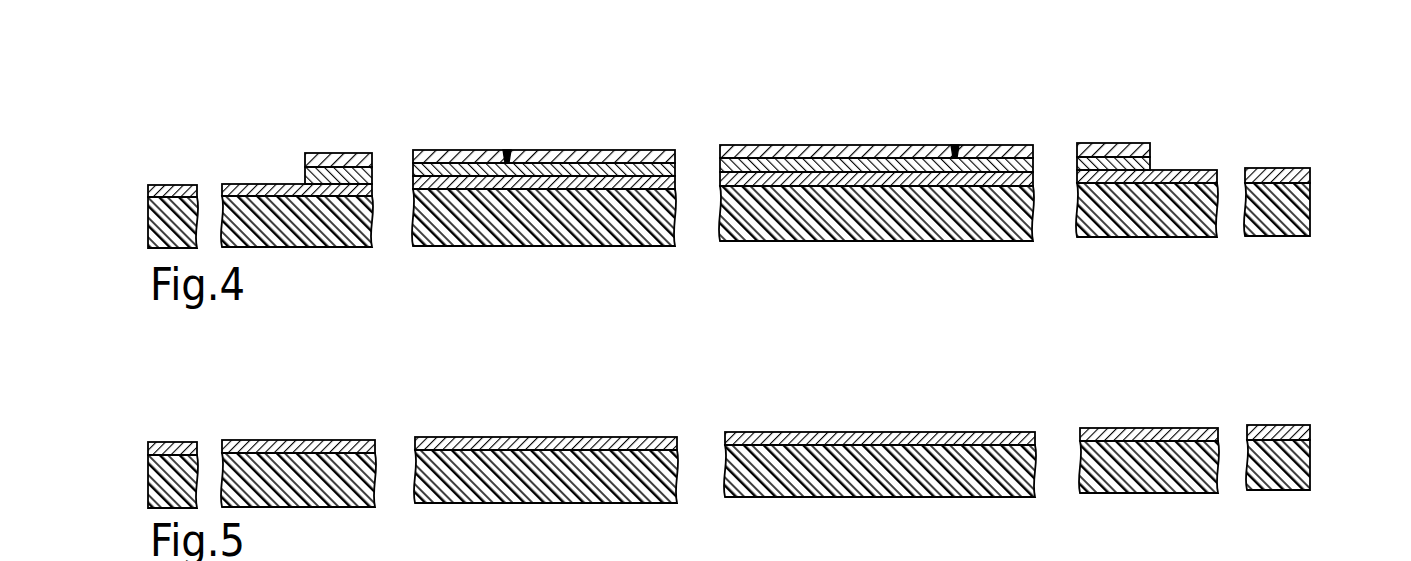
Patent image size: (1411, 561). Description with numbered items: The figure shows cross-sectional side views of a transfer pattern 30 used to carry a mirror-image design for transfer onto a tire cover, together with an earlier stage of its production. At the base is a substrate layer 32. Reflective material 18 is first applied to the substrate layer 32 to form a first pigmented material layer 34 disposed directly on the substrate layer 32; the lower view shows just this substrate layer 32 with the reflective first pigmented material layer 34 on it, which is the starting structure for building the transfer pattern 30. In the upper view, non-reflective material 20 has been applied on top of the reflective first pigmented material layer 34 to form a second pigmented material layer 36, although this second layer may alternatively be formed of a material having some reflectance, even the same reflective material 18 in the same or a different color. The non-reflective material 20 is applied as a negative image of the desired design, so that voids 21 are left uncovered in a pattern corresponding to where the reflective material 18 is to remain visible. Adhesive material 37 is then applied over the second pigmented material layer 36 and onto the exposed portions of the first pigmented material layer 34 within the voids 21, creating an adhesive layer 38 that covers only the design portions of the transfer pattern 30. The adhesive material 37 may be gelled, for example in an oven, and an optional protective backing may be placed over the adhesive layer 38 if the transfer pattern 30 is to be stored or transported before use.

In FIG. 4, the reflective material 18 is at (1037, 180).
In FIG. 5, the reflective material 18 is at (283, 440).
In FIG. 4, the non-reflective material 20 is at (1037, 166).
In FIG. 4, the voids 21 is at (507, 150).
In FIG. 4, the transfer pattern 30 is at (876, 141).
In FIG. 4, the substrate layer 32 is at (1310, 212).
In FIG. 5, the substrate layer 32 is at (1314, 471).
In FIG. 4, the first pigmented material layer 34 is at (1315, 164).
In FIG. 5, the first pigmented material layer 34 is at (1316, 423).
In FIG. 4, the second pigmented material layer 36 is at (1152, 159).
In FIG. 4, the adhesive material 37 is at (565, 150).
In FIG. 4, the adhesive layer 38 is at (1121, 139).